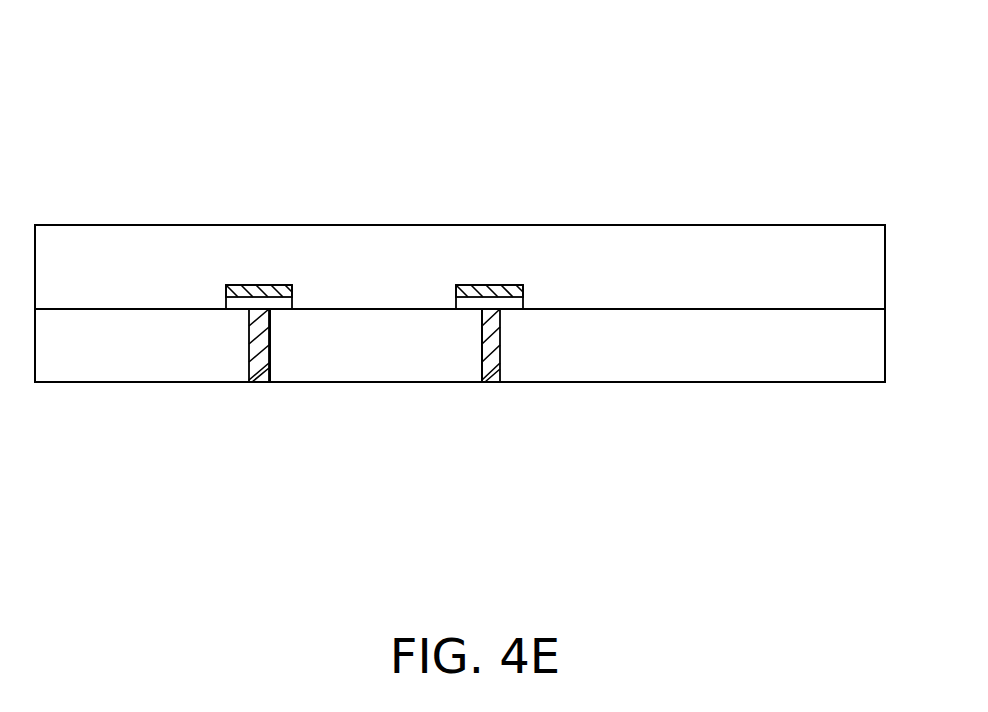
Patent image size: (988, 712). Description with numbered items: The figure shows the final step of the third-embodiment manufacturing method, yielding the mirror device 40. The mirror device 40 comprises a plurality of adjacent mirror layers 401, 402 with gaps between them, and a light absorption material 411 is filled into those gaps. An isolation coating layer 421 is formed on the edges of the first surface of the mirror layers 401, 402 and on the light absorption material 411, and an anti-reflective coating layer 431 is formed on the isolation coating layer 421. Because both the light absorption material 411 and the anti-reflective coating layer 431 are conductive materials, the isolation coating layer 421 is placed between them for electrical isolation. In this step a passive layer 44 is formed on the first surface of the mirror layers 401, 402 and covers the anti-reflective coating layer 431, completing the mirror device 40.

The mirror device 40 is at (764, 136).
The passive layer 44 is at (813, 238).
The mirror layer 401 is at (147, 360).
The mirror layer 402 is at (380, 358).
The light absorption material 411 is at (264, 360).
The isolation coating layer 421 is at (283, 288).
The anti-reflective coating layer 431 is at (242, 288).